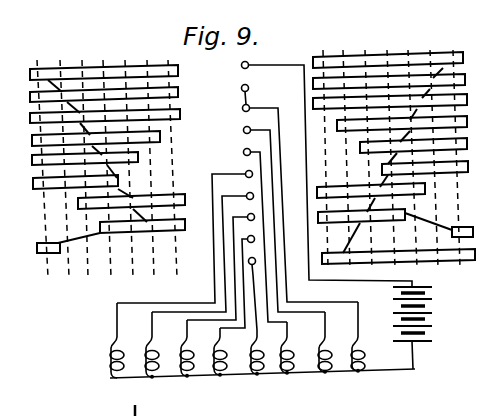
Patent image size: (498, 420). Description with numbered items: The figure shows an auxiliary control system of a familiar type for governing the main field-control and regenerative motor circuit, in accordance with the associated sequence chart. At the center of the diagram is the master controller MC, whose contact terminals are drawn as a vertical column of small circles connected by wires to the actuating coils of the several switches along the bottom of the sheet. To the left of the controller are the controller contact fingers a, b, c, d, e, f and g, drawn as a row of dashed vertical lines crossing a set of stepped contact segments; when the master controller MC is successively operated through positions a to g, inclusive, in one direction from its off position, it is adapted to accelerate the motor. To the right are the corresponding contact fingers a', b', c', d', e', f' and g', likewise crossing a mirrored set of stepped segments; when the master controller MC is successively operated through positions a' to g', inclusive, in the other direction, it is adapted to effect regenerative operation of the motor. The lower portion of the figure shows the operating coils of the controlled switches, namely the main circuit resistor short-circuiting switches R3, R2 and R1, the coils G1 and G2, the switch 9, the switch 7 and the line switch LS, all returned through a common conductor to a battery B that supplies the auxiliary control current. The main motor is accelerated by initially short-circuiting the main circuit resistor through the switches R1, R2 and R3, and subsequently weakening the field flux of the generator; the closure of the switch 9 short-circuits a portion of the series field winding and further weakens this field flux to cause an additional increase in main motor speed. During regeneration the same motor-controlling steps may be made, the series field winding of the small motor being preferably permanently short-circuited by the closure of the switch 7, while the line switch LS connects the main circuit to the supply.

The master controller MC is at (232, 163).
The battery B is at (425, 328).
The switch R3 is at (112, 353).
The governor relay coil G1 is at (152, 358).
The governor relay coil G2 is at (188, 362).
The switch 9 is at (220, 366).
The switch 7 is at (257, 367).
The switch R2 is at (291, 363).
The switch R1 is at (329, 358).
The line switch LS is at (362, 353).
The master controller position a is at (168, 159).
The master controller position b is at (146, 159).
The master controller position c is at (126, 159).
The master controller position d is at (103, 159).
The master controller position e is at (81, 159).
The master controller position f is at (61, 159).
The master controller position g is at (39, 159).
The master controller position a' is at (321, 149).
The master controller position b' is at (344, 149).
The master controller position c' is at (365, 149).
The master controller position d' is at (388, 149).
The master controller position e' is at (410, 149).
The master controller position f' is at (431, 149).
The master controller position g' is at (455, 149).